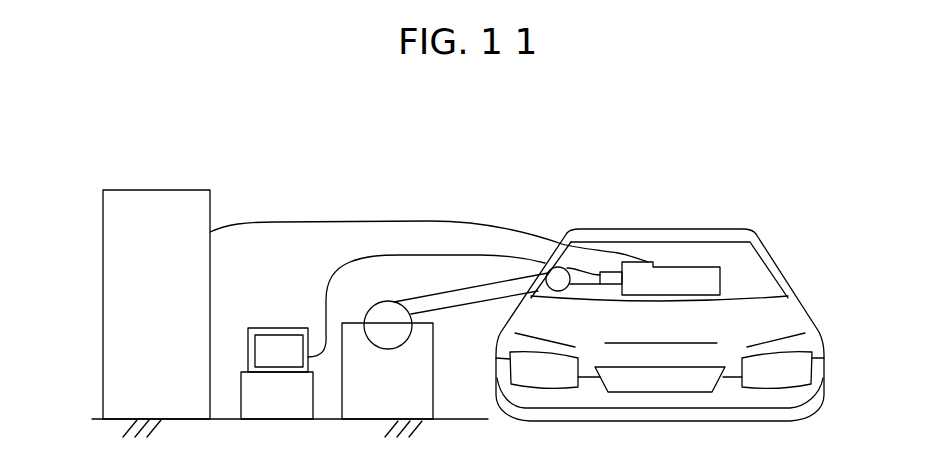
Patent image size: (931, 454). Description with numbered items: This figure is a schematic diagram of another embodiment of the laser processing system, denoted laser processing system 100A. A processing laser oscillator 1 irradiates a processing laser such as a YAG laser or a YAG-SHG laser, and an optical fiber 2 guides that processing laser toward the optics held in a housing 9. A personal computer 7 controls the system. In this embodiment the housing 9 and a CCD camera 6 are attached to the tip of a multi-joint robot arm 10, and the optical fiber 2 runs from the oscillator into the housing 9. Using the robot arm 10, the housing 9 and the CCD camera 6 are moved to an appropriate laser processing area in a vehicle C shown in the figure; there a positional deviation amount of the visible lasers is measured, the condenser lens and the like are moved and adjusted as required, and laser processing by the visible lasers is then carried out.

The processing laser oscillator 1 is at (157, 190).
The optical fiber 2 is at (367, 221).
The CCD camera 6 is at (609, 272).
The personal computer 7 is at (277, 328).
The housing 9 is at (672, 275).
The multi-joint robot arm 10 is at (463, 295).
The vehicle C is at (709, 229).
The laser processing system 100A is at (536, 165).